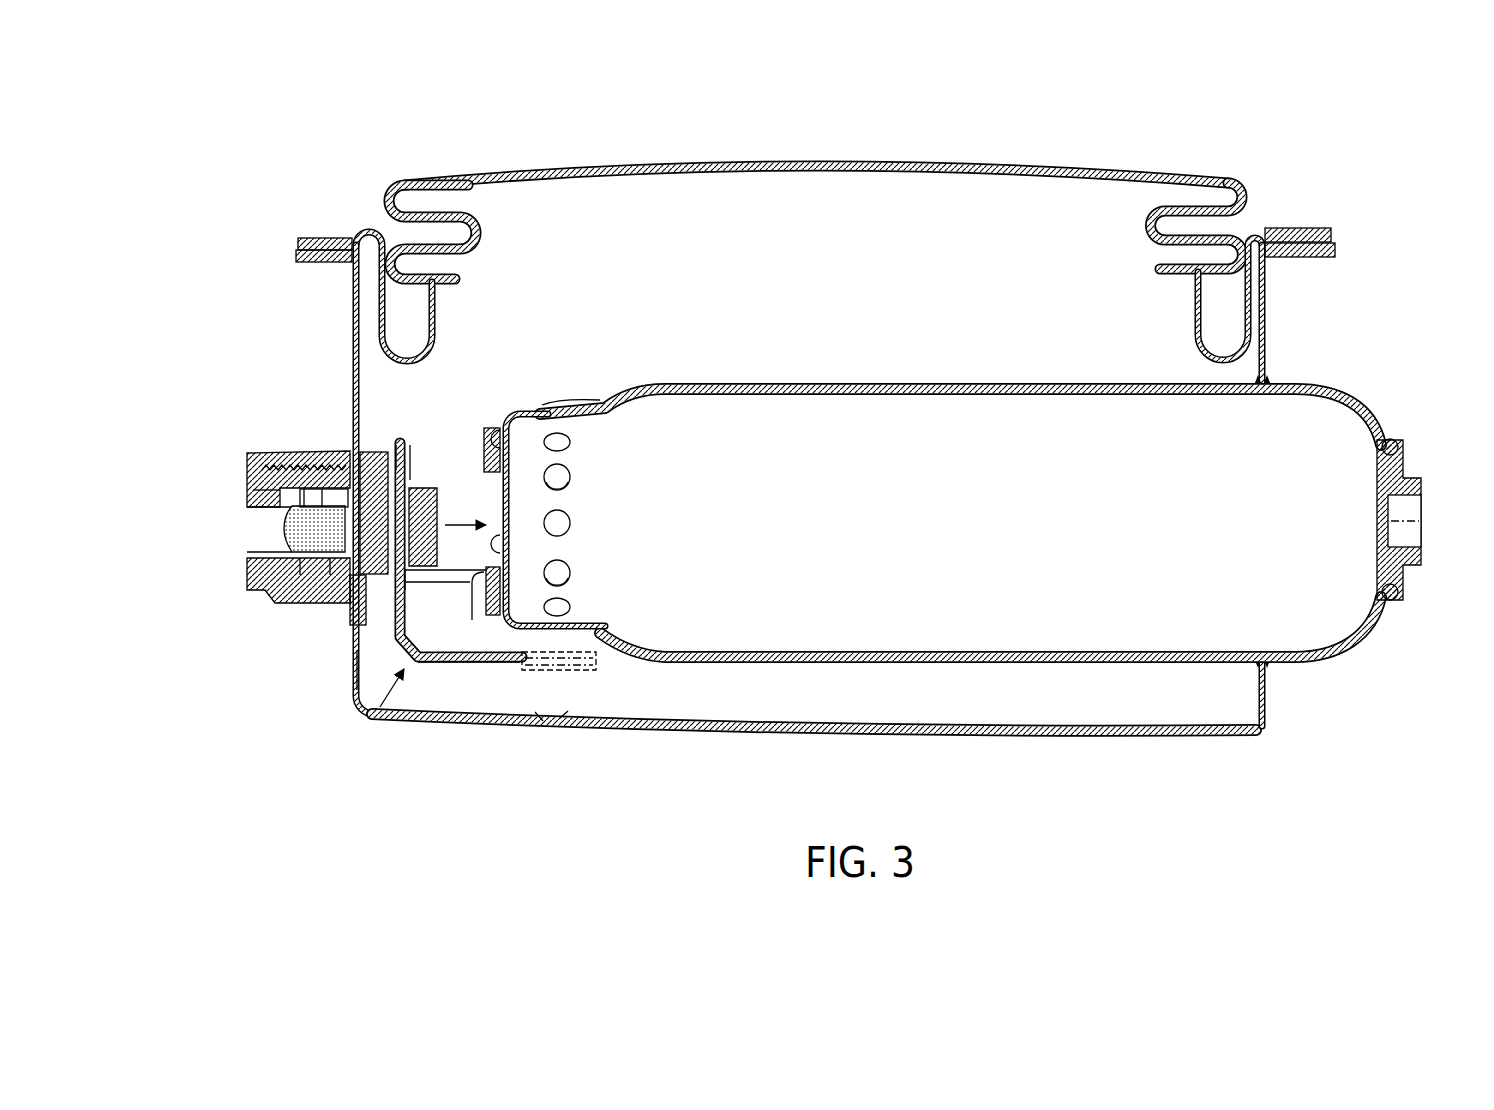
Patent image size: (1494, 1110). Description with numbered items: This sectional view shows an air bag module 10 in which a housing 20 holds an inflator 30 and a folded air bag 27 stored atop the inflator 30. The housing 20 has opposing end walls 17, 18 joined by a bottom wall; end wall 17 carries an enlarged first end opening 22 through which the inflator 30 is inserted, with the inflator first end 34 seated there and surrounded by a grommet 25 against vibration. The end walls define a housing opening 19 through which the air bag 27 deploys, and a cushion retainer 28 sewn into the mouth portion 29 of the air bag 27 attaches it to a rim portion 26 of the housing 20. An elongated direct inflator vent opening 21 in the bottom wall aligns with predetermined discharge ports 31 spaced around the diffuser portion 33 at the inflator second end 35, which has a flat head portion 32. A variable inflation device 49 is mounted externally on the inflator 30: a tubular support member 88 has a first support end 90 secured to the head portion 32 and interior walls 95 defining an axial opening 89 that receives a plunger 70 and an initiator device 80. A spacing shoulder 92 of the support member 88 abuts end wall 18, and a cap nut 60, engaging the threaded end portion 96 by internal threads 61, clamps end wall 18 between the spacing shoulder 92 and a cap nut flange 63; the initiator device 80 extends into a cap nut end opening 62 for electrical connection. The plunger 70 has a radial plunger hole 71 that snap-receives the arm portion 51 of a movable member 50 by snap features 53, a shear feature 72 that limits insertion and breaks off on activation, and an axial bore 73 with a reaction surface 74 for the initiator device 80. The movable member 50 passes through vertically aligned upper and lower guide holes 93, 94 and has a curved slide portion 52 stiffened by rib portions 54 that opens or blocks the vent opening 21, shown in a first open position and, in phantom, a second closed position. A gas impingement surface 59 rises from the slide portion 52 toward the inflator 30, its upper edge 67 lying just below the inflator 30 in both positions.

The air bag module 10 is at (370, 743).
The end wall 17 is at (1268, 298).
The end wall 18 is at (348, 297).
The housing opening 19 is at (1178, 290).
The housing 20 is at (1266, 734).
The direct inflator vent opening 21 is at (565, 722).
The first end opening 22 is at (1288, 658).
The grommet 25 is at (1272, 377).
The rim portion 26 is at (1318, 262).
The air bag 27 is at (1151, 168).
The cushion retainer 28 is at (1310, 238).
The mouth portion 29 is at (368, 226).
The inflator 30 is at (821, 385).
The discharge ports 31 is at (577, 440).
The head portion 32 is at (520, 533).
The diffuser portion 33 is at (539, 409).
The first end 34 is at (1390, 422).
The second end 35 is at (630, 393).
The variable inflation device 49 is at (420, 441).
The movable member 50 is at (377, 712).
The arm portion 51 is at (462, 418).
The slide portion 52 is at (440, 665).
The snap features 53 is at (436, 507).
The rib portions 54 is at (357, 647).
The gas impingement surface 59 is at (430, 573).
The cap nut 60 is at (252, 445).
The internal threads 61 is at (288, 445).
The cap nut end opening 62 is at (262, 495).
The cap nut flange 63 is at (343, 445).
The upper edge 67 is at (556, 640).
The plunger 70 is at (458, 663).
The plunger hole 71 is at (402, 469).
The shear feature 72 is at (300, 590).
The axial bore 73 is at (347, 567).
The reaction surface 74 is at (362, 585).
The initiator device 80 is at (266, 524).
The support member 88 is at (378, 444).
The axial opening 89 is at (360, 618).
The first support end 90 is at (572, 470).
The spacing shoulder 92 is at (398, 443).
The upper guide hole 93 is at (517, 470).
The lower guide hole 94 is at (466, 578).
The interior walls 95 is at (322, 445).
The threaded end portion 96 is at (304, 445).